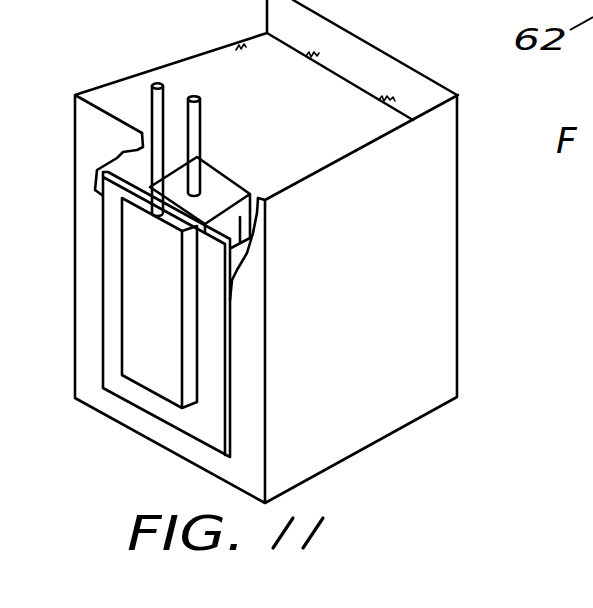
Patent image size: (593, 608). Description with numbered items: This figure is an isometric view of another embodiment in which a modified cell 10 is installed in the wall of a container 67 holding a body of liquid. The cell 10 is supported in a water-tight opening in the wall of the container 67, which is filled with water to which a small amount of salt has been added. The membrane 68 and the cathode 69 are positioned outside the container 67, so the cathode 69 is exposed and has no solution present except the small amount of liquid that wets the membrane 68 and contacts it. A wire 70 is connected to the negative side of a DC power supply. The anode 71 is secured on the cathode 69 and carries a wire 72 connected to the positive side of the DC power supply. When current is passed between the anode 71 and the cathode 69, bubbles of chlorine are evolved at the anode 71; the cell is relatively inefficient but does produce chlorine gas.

The cell 10 is at (237, 146).
The container 67 is at (427, 363).
The membrane 68 is at (113, 263).
The cathode 69 is at (147, 340).
The wire 70 is at (152, 105).
The anode 71 is at (220, 192).
The wire 72 is at (188, 103).